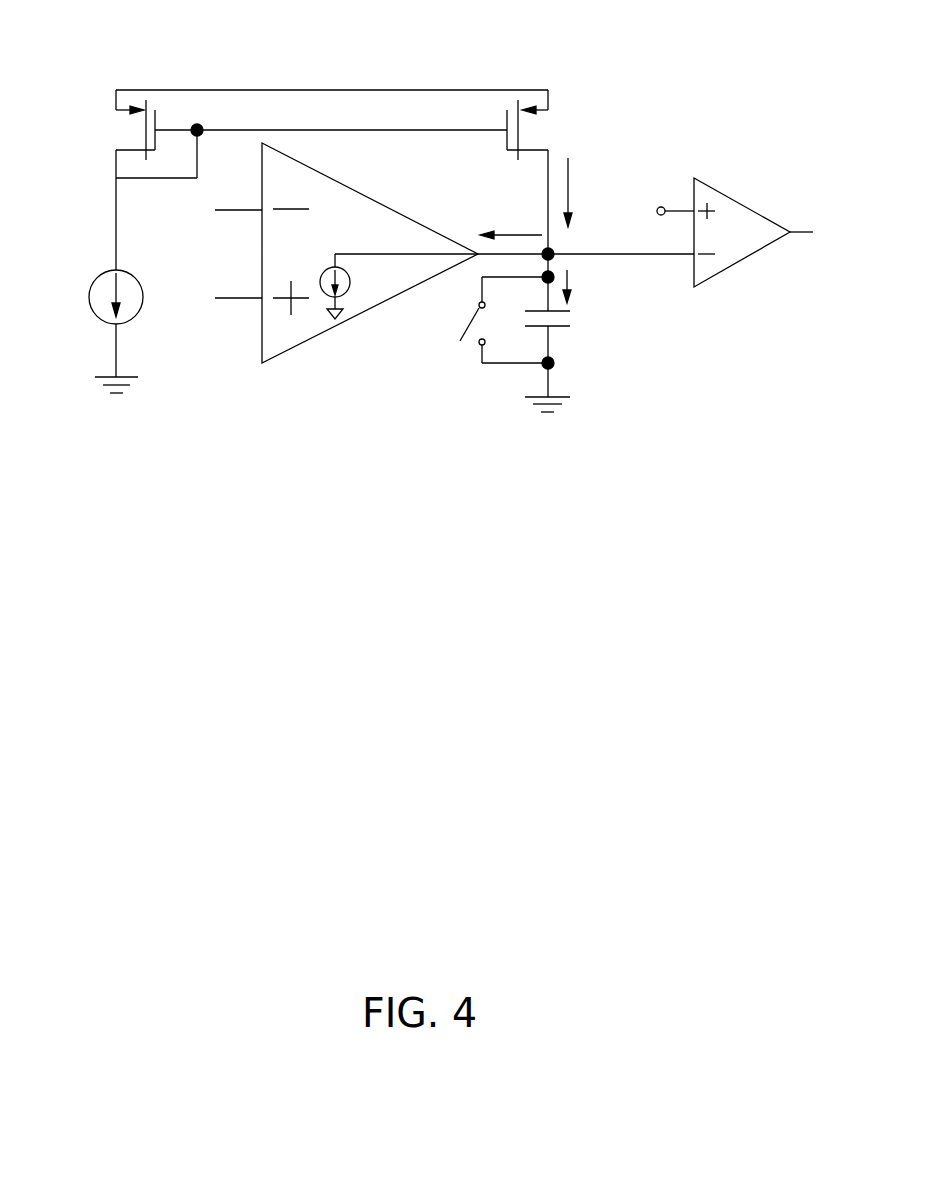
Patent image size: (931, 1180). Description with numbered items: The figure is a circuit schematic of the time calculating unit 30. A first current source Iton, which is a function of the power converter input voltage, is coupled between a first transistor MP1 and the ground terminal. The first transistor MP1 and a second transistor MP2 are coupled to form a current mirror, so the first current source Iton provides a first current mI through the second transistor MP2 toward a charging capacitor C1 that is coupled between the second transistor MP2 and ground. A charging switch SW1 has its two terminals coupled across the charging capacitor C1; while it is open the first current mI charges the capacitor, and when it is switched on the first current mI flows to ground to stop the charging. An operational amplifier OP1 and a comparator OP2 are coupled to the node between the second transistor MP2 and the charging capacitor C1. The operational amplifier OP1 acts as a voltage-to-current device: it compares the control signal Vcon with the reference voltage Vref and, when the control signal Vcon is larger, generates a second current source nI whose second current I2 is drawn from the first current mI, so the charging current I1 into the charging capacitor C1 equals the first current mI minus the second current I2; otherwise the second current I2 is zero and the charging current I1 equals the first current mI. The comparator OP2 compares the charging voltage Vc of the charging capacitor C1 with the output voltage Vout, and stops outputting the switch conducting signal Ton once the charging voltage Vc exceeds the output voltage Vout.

The time calculating unit 30 is at (76, 28).
The first transistor MP1 is at (133, 130).
The second transistor MP2 is at (553, 177).
The operational amplifier OP1 is at (383, 237).
The comparator OP2 is at (762, 244).
The charging switch SW1 is at (485, 320).
The charging capacitor C1 is at (563, 354).
The first current source Iton is at (92, 331).
The second current source nI is at (399, 286).
The first current mI is at (580, 192).
The charging current I1 is at (581, 286).
The second current I2 is at (511, 222).
The reference voltage Vref is at (216, 210).
The control signal Vcon is at (216, 298).
The output voltage Vout is at (647, 211).
The charging voltage Vc is at (621, 267).
The switch conducting signal Ton is at (826, 233).